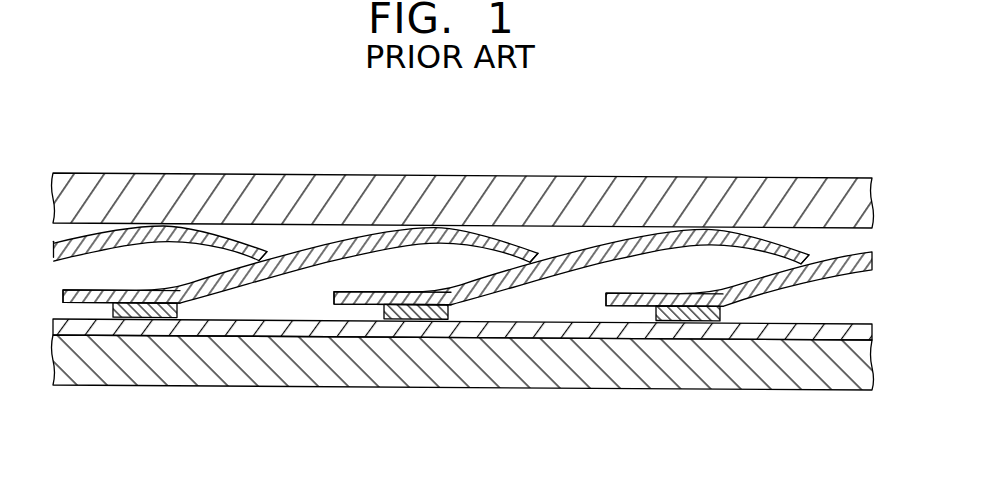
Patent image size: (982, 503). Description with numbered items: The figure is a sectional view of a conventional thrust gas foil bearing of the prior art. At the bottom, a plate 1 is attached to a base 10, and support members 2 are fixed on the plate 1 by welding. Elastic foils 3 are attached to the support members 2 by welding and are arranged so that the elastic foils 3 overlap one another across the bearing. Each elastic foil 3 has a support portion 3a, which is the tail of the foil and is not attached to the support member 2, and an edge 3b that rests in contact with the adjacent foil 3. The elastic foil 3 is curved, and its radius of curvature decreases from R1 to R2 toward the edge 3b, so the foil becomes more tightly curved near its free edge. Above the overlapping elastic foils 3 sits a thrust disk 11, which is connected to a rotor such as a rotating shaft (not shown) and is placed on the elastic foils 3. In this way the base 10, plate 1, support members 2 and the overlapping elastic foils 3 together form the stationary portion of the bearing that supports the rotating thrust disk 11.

The plate 1 is at (260, 326).
The support member 2 is at (155, 321).
The elastic foil 3 is at (541, 278).
The support portion 3a is at (368, 306).
The edge 3b is at (282, 253).
The base 10 is at (88, 380).
The thrust disk 11 is at (537, 190).
The radius of curvature R1 is at (388, 250).
The radius of curvature R2 is at (762, 252).